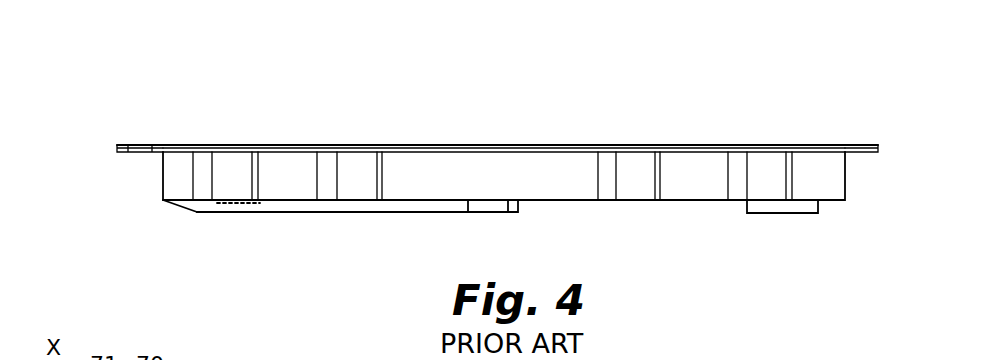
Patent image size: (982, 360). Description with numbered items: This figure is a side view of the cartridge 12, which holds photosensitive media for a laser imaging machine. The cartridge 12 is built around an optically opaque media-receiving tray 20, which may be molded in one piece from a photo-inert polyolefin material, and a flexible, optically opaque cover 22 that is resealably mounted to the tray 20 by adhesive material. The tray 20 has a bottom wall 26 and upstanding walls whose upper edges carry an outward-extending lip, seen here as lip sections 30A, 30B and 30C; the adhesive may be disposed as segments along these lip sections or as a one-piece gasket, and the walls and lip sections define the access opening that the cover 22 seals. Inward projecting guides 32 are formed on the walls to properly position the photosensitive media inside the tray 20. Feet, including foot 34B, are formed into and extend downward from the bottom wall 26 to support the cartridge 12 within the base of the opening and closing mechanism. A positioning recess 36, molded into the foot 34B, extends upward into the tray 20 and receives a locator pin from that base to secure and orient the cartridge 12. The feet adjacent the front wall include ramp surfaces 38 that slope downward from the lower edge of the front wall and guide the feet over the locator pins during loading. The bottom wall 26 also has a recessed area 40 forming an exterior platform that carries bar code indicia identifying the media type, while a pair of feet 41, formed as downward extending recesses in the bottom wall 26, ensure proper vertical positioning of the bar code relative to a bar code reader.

The cartridge 12 is at (613, 63).
The media-receiving tray 20 is at (846, 188).
The flexible cover 22 is at (193, 145).
The bottom wall 26 is at (557, 200).
The lip section 30A is at (117, 150).
The lip section 30B is at (863, 145).
The lip section 30C is at (547, 145).
The inward projecting guides 32 is at (352, 163).
The foot 34B is at (198, 208).
The positioning recess 36 is at (260, 204).
The ramp surface 38 is at (180, 208).
The recessed area 40 is at (334, 205).
The feet 41 is at (485, 205).